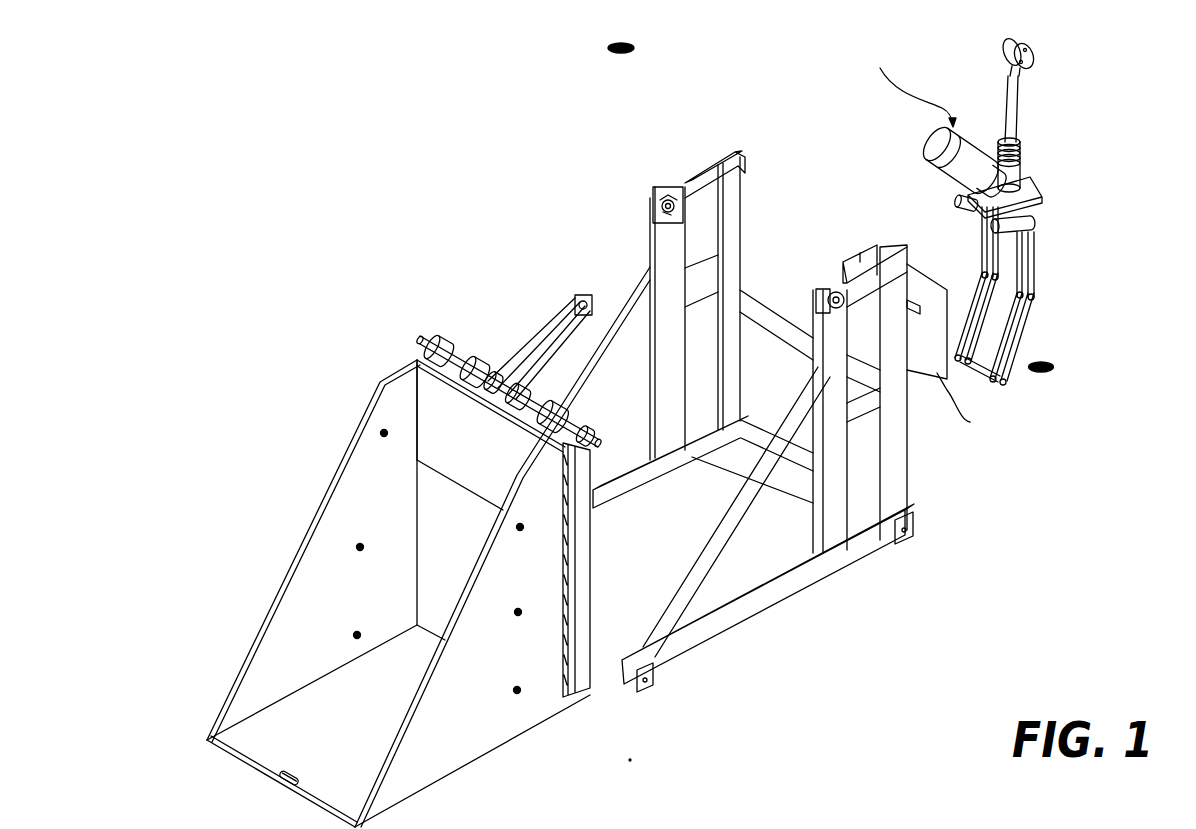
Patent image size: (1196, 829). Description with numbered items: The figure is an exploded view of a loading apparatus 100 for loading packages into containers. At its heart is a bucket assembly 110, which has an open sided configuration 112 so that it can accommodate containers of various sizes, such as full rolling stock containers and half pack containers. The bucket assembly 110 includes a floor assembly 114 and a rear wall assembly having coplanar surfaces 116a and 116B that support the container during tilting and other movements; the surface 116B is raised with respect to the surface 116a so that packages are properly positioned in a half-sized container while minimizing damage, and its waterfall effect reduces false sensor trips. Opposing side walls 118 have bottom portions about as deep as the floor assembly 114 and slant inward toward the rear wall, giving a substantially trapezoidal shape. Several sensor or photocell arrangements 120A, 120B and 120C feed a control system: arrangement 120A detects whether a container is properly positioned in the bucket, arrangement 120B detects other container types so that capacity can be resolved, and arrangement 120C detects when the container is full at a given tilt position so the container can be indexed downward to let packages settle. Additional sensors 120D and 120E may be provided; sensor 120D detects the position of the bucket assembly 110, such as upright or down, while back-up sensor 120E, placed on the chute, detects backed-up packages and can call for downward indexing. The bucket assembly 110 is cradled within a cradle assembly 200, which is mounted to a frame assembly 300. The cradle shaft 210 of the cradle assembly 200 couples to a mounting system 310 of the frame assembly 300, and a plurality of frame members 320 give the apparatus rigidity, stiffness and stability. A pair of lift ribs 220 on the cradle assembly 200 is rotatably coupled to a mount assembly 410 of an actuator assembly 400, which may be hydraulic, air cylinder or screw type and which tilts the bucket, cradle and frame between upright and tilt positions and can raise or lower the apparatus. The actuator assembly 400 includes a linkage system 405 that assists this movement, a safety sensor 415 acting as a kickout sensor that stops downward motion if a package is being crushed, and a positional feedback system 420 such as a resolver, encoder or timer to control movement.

The loading apparatus 100 is at (674, 123).
The bucket assembly 110 is at (470, 723).
The open sided configuration 112 is at (330, 770).
The floor assembly 114 is at (238, 752).
The coplanar surface 116a is at (428, 510).
The coplanar surface 116B is at (443, 405).
The opposing side walls 118 is at (410, 767).
The sensor or photocell arrangement 120A is at (357, 635).
The sensor or photocell arrangement 120B is at (360, 547).
The sensor or photocell arrangement 120C is at (384, 433).
The photocell or sensor 120D is at (632, 760).
The back-up sensor 120E is at (590, 58).
The cradle assembly 200 is at (515, 310).
The cradle shaft 210 is at (420, 340).
The lift ribs 220 is at (568, 297).
The frame assembly 300 is at (765, 222).
The mounting system 310 is at (668, 193).
The frame members 320 is at (893, 460).
The actuator assembly 400 is at (1038, 130).
The linkage system 405 is at (1043, 267).
The mount assembly 410 is at (1023, 43).
The safety sensor 415 is at (1047, 377).
The positional feedback system 420 is at (1022, 157).